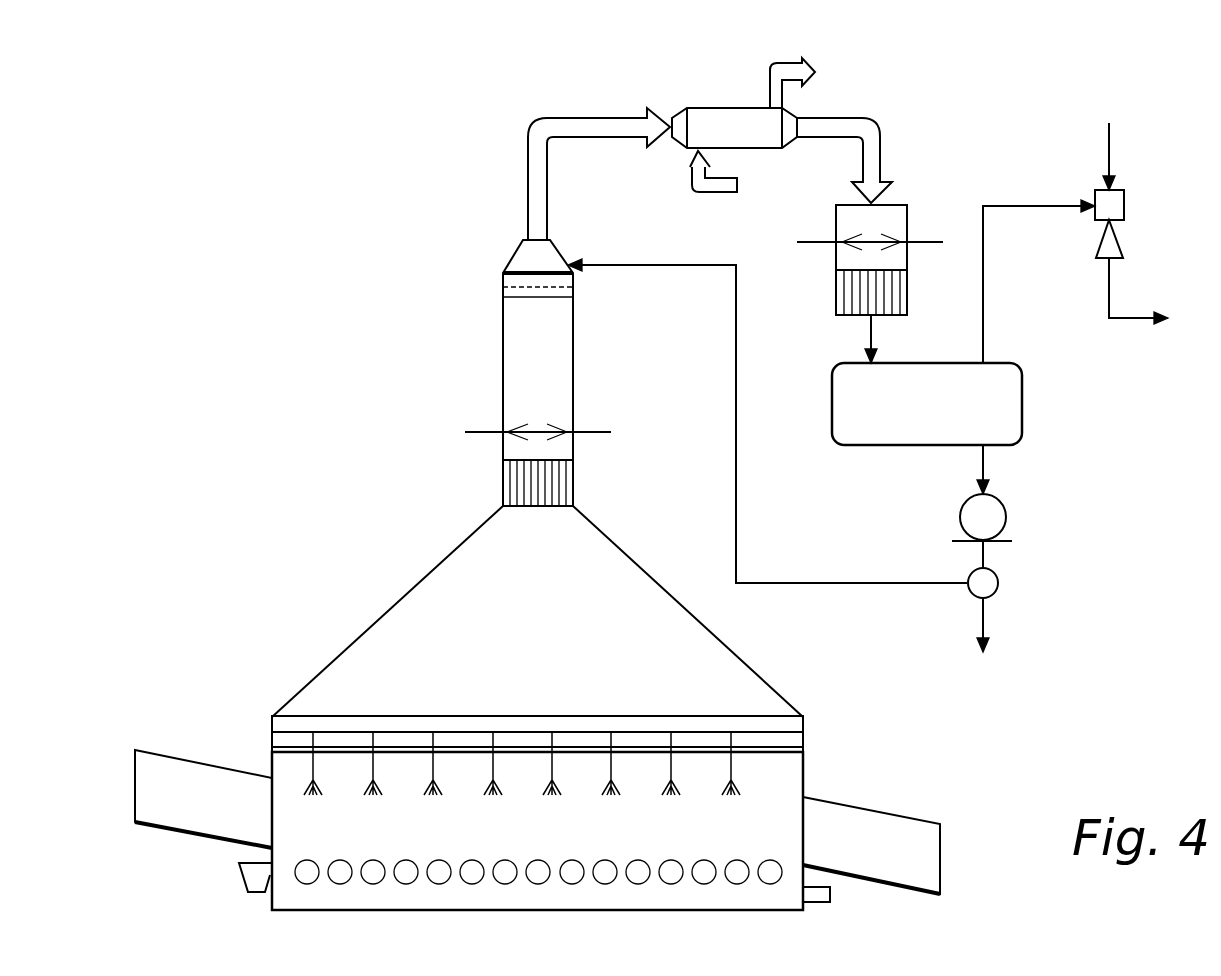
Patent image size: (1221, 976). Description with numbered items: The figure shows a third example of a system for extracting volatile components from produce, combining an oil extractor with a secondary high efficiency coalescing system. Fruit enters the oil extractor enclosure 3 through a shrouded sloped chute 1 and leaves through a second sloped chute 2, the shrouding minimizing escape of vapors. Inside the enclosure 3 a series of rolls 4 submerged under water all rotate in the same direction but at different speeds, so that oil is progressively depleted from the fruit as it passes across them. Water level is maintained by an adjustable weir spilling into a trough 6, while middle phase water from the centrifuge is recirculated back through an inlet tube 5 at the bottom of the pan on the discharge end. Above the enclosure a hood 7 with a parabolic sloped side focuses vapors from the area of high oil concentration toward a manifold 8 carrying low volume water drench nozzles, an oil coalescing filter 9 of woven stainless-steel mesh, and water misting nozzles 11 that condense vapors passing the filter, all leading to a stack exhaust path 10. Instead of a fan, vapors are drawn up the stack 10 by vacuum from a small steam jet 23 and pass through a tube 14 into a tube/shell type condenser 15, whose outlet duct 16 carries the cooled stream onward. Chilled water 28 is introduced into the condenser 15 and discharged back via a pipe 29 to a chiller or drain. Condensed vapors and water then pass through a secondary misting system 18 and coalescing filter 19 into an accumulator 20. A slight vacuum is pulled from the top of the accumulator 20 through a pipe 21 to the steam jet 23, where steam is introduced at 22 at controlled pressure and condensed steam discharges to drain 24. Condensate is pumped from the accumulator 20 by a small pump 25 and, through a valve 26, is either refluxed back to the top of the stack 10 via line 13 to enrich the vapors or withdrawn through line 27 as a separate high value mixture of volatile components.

The sloped chute 1 is at (200, 815).
The sloped chute 2 is at (860, 838).
The oil extractor enclosure 3 is at (447, 912).
The rolls 4 is at (368, 873).
The inlet tube 5 is at (817, 898).
The trough 6 is at (253, 883).
The hood 7 is at (482, 618).
The manifold 8 is at (698, 728).
The oil coalescing filter 9 is at (552, 483).
The stack exhaust path 10 is at (525, 333).
The water misting nozzles 11 is at (590, 432).
The reflux line 13 is at (640, 266).
The tube 14 is at (535, 177).
The tube/shell type condenser 15 is at (737, 122).
The gas duct 16 is at (872, 138).
The secondary misting system 18 is at (920, 243).
The coalescing filter 19 is at (858, 295).
The accumulator 20 is at (907, 445).
The pipe 21 is at (1053, 205).
The steam introduction 22 is at (1112, 147).
The small steam jet 23 is at (1115, 203).
The drain 24 is at (1140, 318).
The small pump 25 is at (985, 517).
The valve 26 is at (990, 585).
The highly enriched component line 27 is at (985, 618).
The chilled water inlet 28 is at (715, 188).
The pipe 29 is at (773, 72).